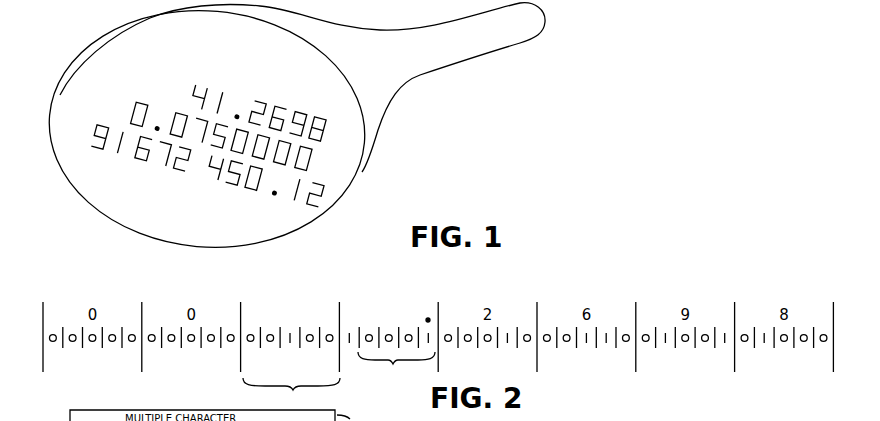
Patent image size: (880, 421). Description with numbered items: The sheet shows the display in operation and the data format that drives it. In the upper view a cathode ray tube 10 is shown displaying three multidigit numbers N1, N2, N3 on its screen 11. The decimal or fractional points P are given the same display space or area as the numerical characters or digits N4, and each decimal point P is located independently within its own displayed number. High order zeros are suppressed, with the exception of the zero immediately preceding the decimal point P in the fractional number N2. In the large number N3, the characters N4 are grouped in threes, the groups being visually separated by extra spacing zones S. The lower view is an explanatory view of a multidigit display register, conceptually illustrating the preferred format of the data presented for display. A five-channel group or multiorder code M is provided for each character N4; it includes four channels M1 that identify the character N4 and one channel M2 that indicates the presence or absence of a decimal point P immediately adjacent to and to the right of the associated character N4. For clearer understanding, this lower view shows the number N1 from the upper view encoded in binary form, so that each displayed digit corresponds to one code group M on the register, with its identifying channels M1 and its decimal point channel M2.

In FIG. 1, the cathode ray tube 10 is at (407, 83).
In FIG. 1, the screen 11 is at (93, 182).
In FIG. 1, the multidigit number N1 is at (82, 68).
In FIG. 1, the fractional number N2 is at (80, 102).
In FIG. 1, the large number N3 is at (90, 132).
In FIG. 1, the numerical character N4 is at (220, 110).
In FIG. 2, the numerical character N4 is at (376, 313).
In FIG. 1, the spacing zone S is at (133, 157).
In FIG. 1, the decimal point P is at (237, 112).
In FIG. 2, the decimal point P is at (428, 317).
In FIG. 2, the multiorder code M is at (291, 370).
In FIG. 2, the channels for identifying the character M1 is at (393, 364).
In FIG. 2, the channel for indicating decimal point M2 is at (350, 348).